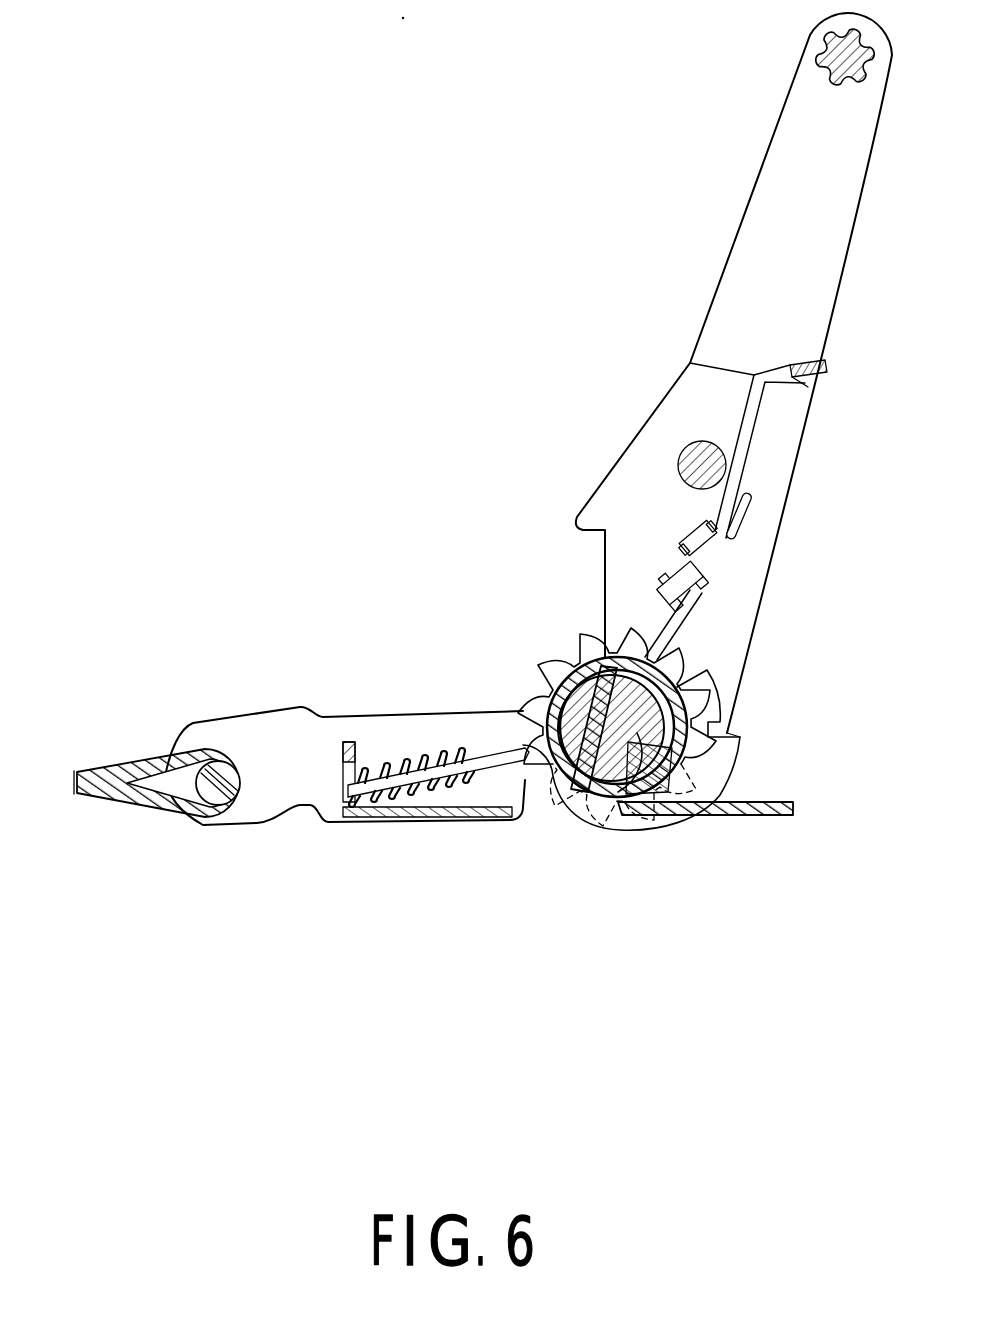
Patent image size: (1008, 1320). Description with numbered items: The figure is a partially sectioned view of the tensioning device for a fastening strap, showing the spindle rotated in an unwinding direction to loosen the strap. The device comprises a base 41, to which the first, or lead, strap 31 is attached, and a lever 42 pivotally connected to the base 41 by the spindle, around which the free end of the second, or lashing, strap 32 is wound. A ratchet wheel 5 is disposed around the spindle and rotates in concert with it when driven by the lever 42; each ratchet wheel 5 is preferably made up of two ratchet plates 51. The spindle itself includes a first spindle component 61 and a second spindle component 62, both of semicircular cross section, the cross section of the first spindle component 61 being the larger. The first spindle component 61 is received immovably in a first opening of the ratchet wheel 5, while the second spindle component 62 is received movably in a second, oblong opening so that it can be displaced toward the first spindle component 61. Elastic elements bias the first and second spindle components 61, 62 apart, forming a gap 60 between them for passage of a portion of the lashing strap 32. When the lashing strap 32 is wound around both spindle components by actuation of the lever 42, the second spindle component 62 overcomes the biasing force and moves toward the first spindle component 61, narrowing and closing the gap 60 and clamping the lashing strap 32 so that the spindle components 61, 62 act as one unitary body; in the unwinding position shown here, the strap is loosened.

The ratchet wheel 5 is at (599, 669).
The first strap 31 is at (103, 797).
The second strap 32 is at (727, 815).
The base 41 is at (340, 717).
The lever 42 is at (720, 282).
The ratchet plate 51 is at (540, 653).
The gap 60 is at (620, 780).
The first spindle component 61 is at (665, 650).
The second spindle component 62 is at (551, 770).